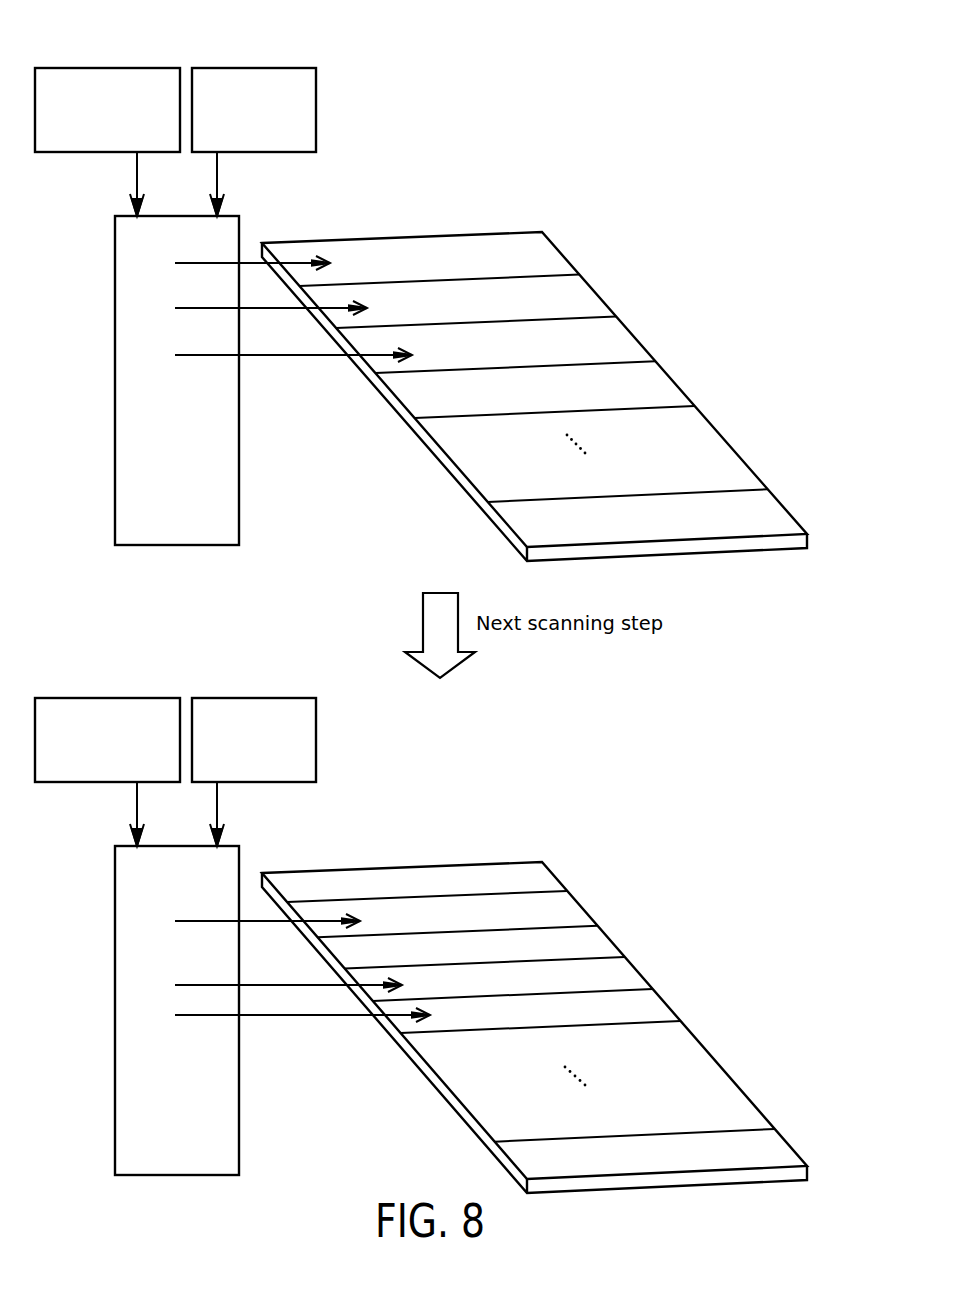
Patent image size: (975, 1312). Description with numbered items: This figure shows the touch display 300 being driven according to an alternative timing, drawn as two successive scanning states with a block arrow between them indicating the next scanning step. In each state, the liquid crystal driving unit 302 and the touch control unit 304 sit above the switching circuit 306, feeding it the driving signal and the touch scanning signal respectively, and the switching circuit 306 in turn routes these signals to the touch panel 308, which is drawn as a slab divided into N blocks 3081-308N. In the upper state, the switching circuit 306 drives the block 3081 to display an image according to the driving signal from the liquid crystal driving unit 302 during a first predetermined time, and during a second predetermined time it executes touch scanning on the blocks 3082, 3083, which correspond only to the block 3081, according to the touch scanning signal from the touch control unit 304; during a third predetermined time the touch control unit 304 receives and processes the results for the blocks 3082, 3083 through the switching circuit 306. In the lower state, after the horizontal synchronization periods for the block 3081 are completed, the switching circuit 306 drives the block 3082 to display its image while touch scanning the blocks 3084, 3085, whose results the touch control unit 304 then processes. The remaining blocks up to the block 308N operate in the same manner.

The touch display 300 is at (707, 83).
The liquid crystal driving unit 302 is at (104, 68).
The touch control unit 304 is at (252, 68).
The switching circuit 306 is at (115, 413).
The touch panel 308 is at (433, 232).
The block 3081 is at (556, 246).
The block 3082 is at (595, 288).
The block 3083 is at (632, 333).
The block 3084 is at (670, 376).
The block 3085 is at (672, 1005).
The block 308N is at (784, 502).